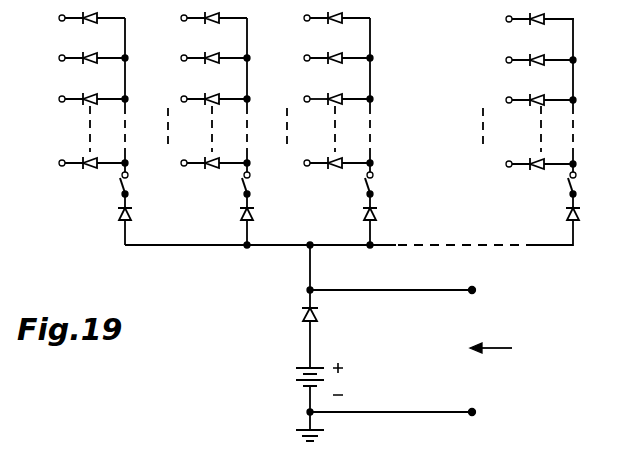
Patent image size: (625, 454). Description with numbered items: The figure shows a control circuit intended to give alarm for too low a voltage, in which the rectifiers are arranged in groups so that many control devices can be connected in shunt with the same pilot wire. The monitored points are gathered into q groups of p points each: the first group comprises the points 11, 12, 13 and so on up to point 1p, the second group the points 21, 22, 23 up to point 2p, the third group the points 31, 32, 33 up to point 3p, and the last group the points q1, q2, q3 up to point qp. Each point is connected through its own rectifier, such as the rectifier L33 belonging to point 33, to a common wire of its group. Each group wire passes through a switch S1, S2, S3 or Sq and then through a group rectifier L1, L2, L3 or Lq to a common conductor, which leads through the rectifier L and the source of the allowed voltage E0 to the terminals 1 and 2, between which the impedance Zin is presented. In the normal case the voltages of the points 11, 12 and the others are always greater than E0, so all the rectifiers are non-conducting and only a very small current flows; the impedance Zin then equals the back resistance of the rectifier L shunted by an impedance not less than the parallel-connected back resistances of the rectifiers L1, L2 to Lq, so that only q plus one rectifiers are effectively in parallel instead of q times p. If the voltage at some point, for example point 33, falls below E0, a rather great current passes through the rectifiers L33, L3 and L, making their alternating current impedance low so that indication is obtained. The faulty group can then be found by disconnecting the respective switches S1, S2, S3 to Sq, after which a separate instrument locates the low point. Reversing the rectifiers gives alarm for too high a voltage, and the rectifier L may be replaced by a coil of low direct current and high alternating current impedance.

The point 11 is at (80, 19).
The point 12 is at (82, 59).
The point 13 is at (82, 100).
The point 1p is at (82, 164).
The point 21 is at (202, 19).
The point 22 is at (204, 59).
The point 23 is at (204, 100).
The point 2p is at (204, 164).
The point 31 is at (325, 19).
The point 32 is at (327, 59).
The point 33 is at (304, 100).
The rectifier L33 is at (350, 89).
The point 3p is at (327, 164).
The point q1 is at (525, 19).
The point q2 is at (527, 60).
The point q3 is at (527, 101).
The point qp is at (527, 165).
The switch S1 is at (110, 185).
The switch S2 is at (232, 185).
The switch S3 is at (355, 185).
The switch Sq is at (557, 185).
The rectifier L1 is at (111, 219).
The rectifier L2 is at (233, 221).
The rectifier L3 is at (356, 221).
The rectifier Lq is at (555, 219).
The rectifier L is at (319, 338).
The allowed voltage E0 is at (355, 364).
The terminal 1 is at (400, 291).
The terminal 2 is at (400, 413).
The impedance Zin is at (491, 360).